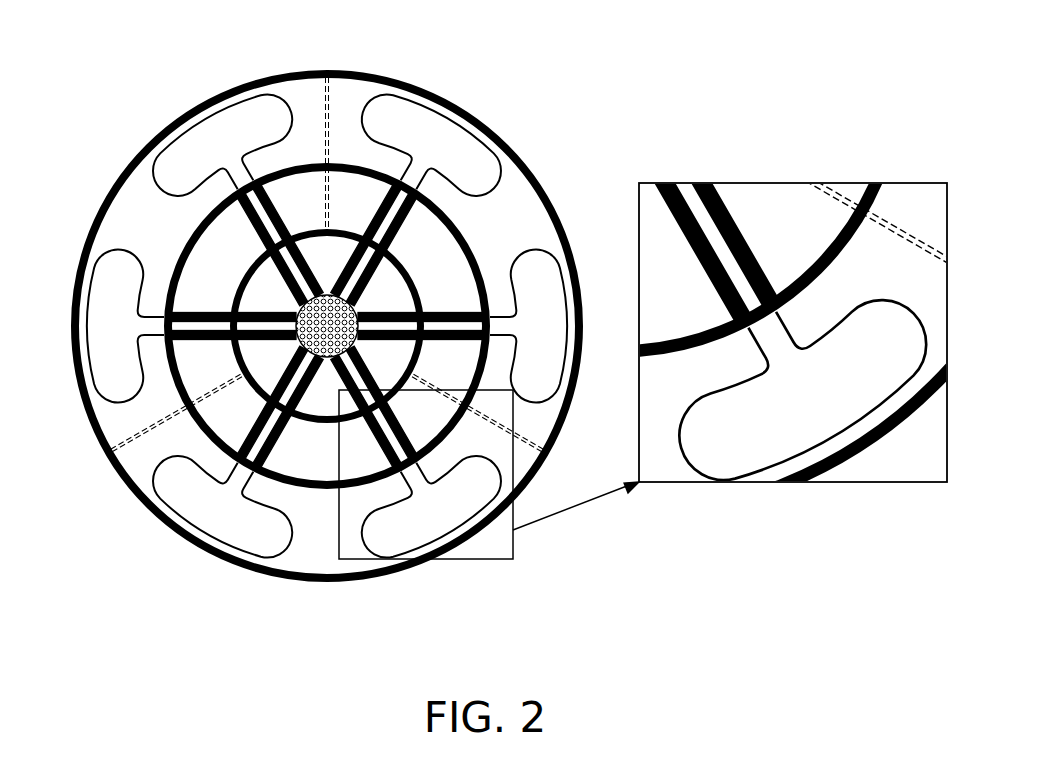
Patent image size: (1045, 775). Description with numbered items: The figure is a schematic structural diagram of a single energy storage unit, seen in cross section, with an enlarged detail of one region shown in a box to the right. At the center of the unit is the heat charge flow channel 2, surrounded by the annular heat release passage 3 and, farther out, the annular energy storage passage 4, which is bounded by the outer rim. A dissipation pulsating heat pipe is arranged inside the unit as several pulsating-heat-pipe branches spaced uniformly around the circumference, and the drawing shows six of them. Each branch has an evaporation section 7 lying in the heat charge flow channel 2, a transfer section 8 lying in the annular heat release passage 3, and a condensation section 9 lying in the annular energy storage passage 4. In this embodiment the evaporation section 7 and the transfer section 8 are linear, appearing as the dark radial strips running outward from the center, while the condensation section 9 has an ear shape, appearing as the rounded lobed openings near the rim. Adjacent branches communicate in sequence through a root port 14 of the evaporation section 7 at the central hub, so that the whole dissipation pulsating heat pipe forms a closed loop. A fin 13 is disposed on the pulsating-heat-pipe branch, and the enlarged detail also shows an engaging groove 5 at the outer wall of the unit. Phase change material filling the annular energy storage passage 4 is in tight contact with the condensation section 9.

The heat charge flow channel 2 is at (241, 265).
The annular heat release passage 3 is at (260, 326).
The annular energy storage passage 4 is at (327, 348).
The engaging groove 5 is at (608, 273).
The evaporation section 7 is at (486, 226).
The transfer section 8 is at (324, 153).
The condensation section 9 is at (461, 151).
The fin 13 is at (734, 213).
The root port 14 is at (461, 271).